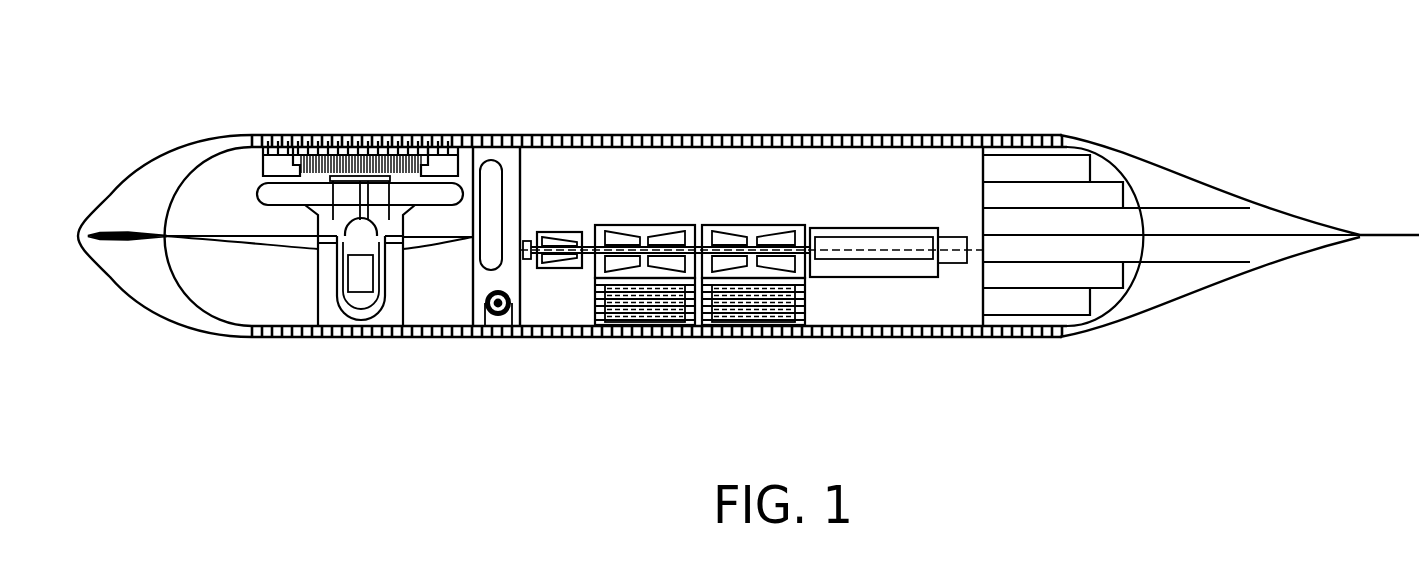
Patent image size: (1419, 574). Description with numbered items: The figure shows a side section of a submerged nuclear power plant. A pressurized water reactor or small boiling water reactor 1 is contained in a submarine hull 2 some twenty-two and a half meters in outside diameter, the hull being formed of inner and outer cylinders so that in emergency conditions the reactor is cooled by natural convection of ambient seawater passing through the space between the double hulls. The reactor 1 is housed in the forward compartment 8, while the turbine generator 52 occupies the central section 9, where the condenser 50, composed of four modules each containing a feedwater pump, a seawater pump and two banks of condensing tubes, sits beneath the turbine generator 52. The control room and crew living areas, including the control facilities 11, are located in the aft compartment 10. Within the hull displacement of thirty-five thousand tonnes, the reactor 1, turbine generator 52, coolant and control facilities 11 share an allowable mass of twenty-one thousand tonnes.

The reactor 1 is at (366, 180).
The submarine hull 2 is at (142, 163).
The forward compartment 8 is at (218, 185).
The central section 9 is at (733, 175).
The aft compartment 10 is at (1037, 170).
The control facilities 11 is at (1097, 273).
The condenser 50 is at (650, 312).
The turbine generator 52 is at (566, 268).